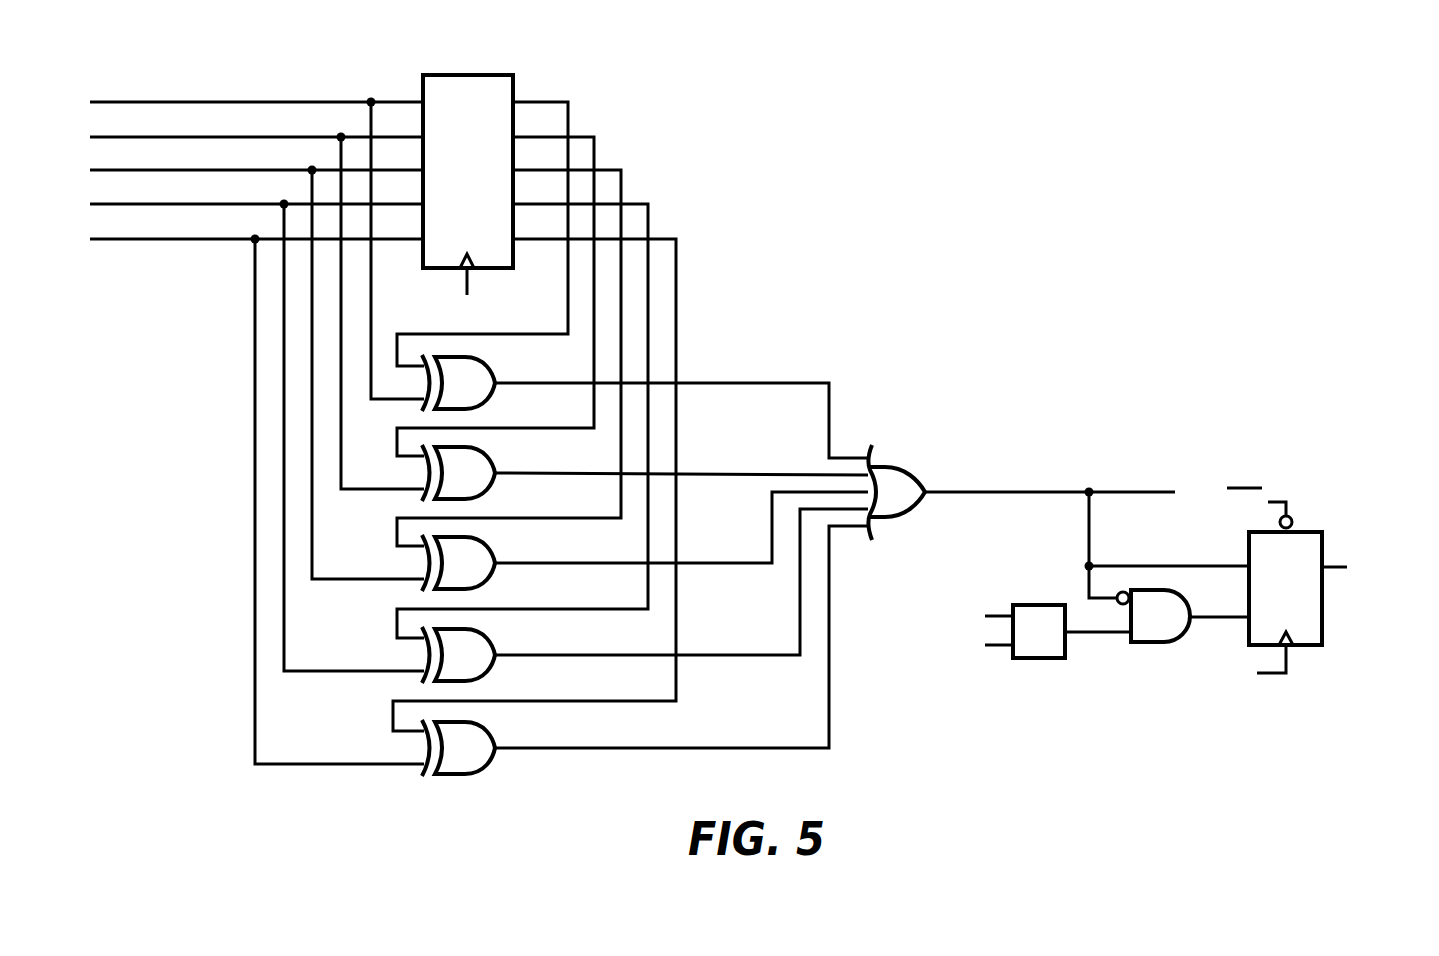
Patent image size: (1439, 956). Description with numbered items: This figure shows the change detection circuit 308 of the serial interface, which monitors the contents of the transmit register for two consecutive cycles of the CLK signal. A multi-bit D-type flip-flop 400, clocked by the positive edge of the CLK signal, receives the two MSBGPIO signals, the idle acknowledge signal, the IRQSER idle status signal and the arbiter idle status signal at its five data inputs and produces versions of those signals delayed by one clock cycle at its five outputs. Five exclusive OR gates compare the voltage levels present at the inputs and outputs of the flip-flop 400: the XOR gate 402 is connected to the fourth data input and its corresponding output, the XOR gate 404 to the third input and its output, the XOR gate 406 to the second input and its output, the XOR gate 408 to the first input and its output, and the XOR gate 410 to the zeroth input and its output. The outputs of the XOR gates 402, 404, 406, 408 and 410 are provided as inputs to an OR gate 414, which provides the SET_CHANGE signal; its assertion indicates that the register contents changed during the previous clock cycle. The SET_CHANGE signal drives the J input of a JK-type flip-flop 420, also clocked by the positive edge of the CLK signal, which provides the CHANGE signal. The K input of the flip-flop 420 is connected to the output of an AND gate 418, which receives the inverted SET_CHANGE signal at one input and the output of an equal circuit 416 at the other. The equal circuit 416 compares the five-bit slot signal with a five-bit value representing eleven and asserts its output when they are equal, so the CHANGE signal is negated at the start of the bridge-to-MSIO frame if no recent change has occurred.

The change detection circuit 308 is at (757, 423).
The D-type flip-flop 400 is at (503, 74).
The XOR gate 402 is at (482, 400).
The XOR gate 404 is at (482, 490).
The XOR gate 406 is at (482, 580).
The XOR gate 408 is at (482, 672).
The XOR gate 410 is at (482, 765).
The OR gate 414 is at (902, 470).
The equal circuit 416 is at (1030, 605).
The AND gate 418 is at (1150, 643).
The JK-type flip-flop 420 is at (1318, 532).